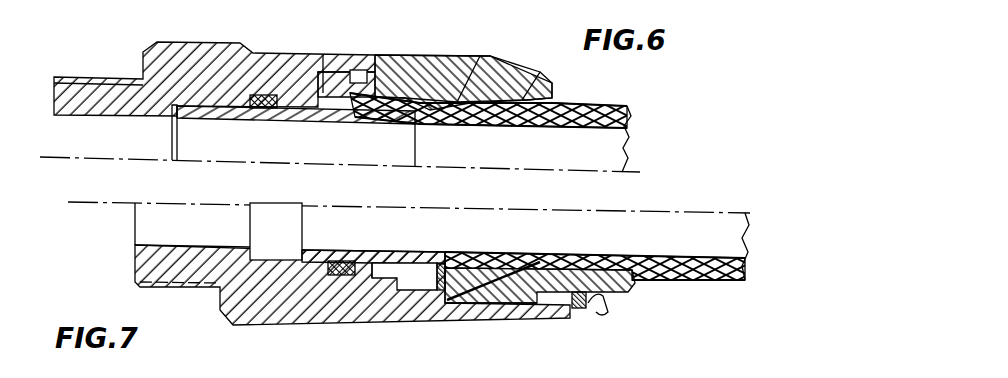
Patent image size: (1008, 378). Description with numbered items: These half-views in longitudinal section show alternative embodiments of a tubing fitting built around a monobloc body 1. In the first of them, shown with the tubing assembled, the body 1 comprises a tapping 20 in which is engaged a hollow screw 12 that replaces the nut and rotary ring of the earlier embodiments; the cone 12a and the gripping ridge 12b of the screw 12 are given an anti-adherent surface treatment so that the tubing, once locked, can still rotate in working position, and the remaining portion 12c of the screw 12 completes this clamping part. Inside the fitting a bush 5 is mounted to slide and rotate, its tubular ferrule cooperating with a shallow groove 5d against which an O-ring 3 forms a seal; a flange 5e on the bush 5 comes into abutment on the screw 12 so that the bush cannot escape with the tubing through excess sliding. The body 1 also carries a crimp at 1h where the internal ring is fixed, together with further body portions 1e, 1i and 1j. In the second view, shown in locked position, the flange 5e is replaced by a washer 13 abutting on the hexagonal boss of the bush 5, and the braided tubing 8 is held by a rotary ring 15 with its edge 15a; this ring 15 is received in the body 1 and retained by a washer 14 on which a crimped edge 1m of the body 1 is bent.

In FIG. 6, the body 1 is at (205, 62).
In FIG. 7, the body 1 is at (140, 265).
In FIG. 7, the housing end face 1e is at (152, 242).
In FIG. 7, the crimp 1h is at (378, 276).
In FIG. 7, the housing groove wall 1i is at (441, 292).
In FIG. 7, the housing flange 1j is at (500, 288).
In FIG. 7, the crimped edge 1m is at (606, 312).
In FIG. 6, the O-ring 3 is at (263, 101).
In FIG. 7, the O-ring 3 is at (342, 260).
In FIG. 7, the bush 5 is at (302, 254).
In FIG. 7, the shallow groove 5d is at (388, 262).
In FIG. 6, the flange 5e is at (322, 80).
In FIG. 7, the cable braid 8 is at (690, 277).
In FIG. 6, the hollow screw 12 is at (550, 93).
In FIG. 6, the cone 12a is at (398, 73).
In FIG. 6, the gripping ridge 12b is at (458, 102).
In FIG. 6, the clamping ring conical portion 12c is at (528, 97).
In FIG. 7, the washer 13 is at (432, 280).
In FIG. 7, the washer 14 is at (592, 305).
In FIG. 7, the rotary ring 15 is at (627, 290).
In FIG. 7, the clamping edge 15a is at (538, 270).
In FIG. 6, the tapping 20 is at (378, 56).